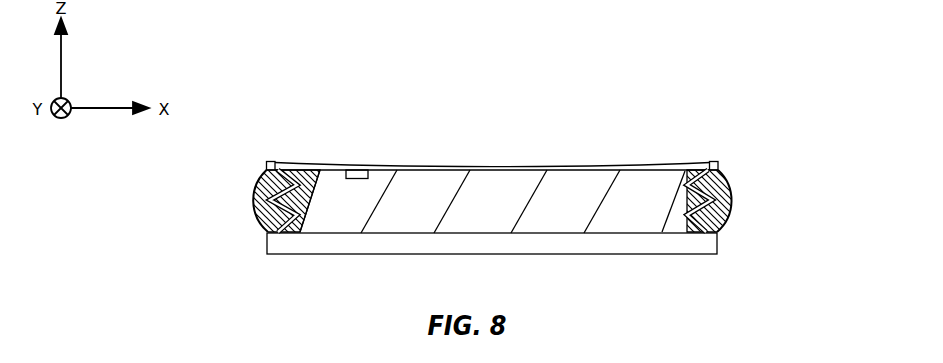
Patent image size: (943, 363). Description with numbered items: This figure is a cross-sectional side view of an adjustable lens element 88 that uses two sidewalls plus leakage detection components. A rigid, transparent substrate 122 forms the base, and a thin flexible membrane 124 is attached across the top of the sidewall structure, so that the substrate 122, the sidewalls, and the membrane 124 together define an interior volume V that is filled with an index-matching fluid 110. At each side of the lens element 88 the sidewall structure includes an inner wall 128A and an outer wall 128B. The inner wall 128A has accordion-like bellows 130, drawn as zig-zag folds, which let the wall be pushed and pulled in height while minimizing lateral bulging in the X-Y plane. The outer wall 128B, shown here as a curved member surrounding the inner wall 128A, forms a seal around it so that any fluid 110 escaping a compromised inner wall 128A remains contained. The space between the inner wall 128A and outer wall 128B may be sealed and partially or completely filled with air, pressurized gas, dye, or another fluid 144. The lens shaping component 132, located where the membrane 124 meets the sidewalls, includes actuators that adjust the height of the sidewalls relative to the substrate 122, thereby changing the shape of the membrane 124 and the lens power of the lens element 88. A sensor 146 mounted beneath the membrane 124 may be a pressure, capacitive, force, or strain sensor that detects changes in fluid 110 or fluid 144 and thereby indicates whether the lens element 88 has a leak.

The adjustable lens element 88 is at (268, 77).
The fluid 110 is at (528, 180).
The substrate 122 is at (719, 241).
The flexible membrane 124 is at (637, 170).
The inner wall 128A is at (293, 234).
The outer wall 128B is at (258, 230).
The bellows 130 is at (310, 185).
The lens shaping component 132 is at (270, 161).
The fluid 144 is at (264, 190).
The sensor 146 is at (356, 170).